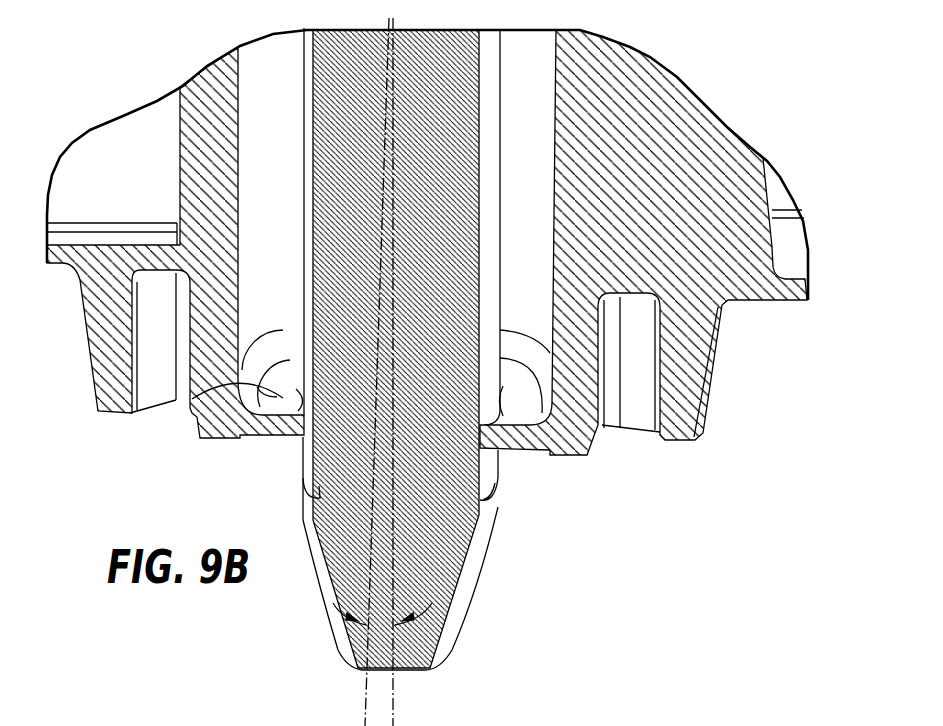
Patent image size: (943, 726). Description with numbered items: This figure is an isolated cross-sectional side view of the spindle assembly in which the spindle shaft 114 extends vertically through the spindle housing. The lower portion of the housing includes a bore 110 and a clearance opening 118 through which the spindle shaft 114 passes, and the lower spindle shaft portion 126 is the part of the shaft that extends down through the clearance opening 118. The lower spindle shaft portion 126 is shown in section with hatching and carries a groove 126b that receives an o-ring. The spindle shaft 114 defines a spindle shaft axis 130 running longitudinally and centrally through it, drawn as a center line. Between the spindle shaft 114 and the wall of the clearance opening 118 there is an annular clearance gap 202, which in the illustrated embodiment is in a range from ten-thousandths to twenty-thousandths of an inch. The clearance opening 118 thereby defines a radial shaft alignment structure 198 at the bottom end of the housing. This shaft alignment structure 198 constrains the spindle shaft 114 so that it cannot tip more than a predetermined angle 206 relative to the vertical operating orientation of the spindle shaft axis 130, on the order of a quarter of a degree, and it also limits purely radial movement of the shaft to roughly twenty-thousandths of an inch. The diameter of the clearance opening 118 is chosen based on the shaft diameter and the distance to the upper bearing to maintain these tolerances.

The bore 110 is at (519, 276).
The spindle shaft 114 is at (480, 117).
The clearance opening 118 is at (497, 467).
The lower spindle shaft portion 126 is at (340, 513).
The groove 126b is at (500, 517).
The spindle shaft axis 130 is at (393, 535).
The radial shaft alignment structure 198 is at (191, 403).
The annular clearance gap 202 is at (283, 360).
The predetermined angle 206 is at (447, 632).